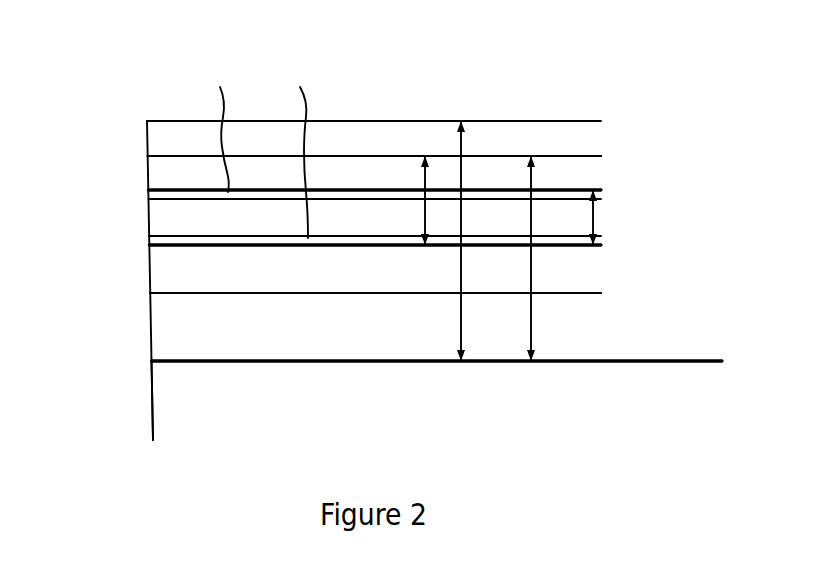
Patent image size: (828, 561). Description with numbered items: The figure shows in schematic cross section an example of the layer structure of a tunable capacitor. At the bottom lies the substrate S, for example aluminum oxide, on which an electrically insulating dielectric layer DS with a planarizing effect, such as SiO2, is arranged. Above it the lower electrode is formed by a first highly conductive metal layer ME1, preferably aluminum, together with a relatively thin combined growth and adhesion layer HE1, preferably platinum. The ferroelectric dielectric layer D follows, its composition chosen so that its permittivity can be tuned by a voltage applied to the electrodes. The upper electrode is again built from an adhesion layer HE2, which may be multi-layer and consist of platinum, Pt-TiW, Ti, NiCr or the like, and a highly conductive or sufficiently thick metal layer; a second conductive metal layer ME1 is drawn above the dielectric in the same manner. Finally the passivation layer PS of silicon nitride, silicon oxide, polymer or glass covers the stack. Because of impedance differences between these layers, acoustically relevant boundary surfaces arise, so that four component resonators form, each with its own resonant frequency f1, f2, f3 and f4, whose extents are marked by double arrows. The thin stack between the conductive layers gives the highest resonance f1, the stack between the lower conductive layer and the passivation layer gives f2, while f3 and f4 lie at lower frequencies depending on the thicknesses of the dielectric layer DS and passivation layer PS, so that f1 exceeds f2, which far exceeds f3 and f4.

The passivation layer PS is at (166, 139).
The first highly conductive metal layer ME1 is at (163, 171).
The dielectric layer D is at (181, 219).
The electrically insulating dielectric layer DS is at (170, 333).
The substrate S is at (170, 415).
The upper adhesion layer HE2 is at (202, 118).
The combined growth and adhesion layer HE1 is at (293, 141).
The resonant frequency f1 is at (609, 217).
The resonant frequency f2 is at (404, 200).
The resonant frequency f3 is at (551, 258).
The resonant frequency f4 is at (437, 241).